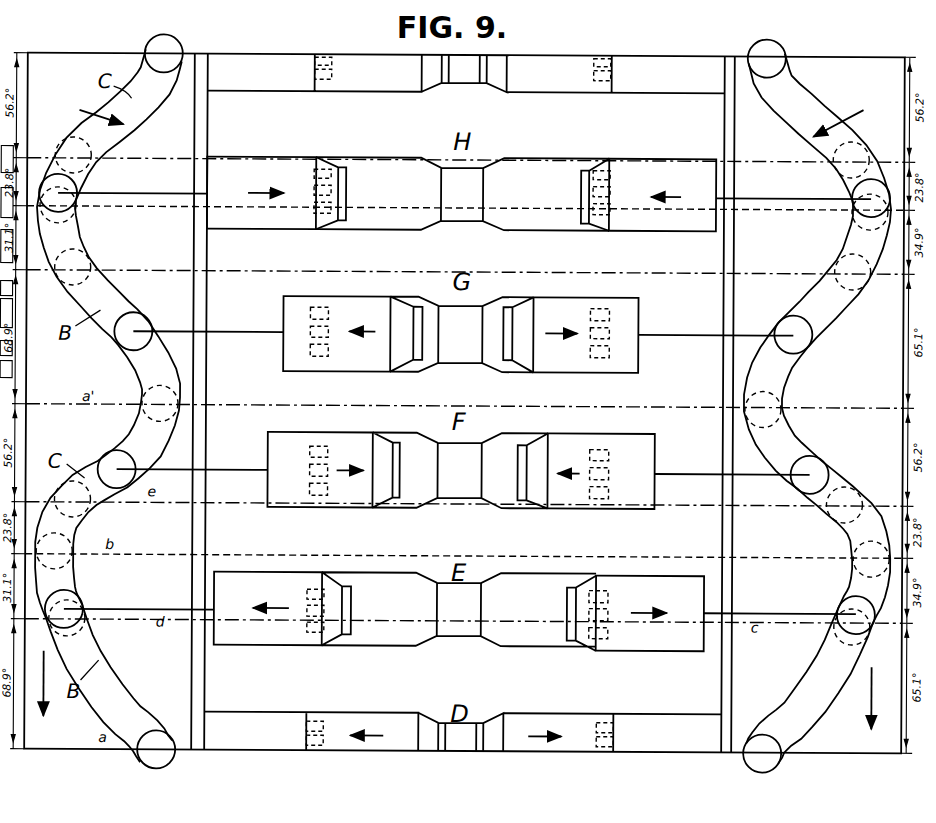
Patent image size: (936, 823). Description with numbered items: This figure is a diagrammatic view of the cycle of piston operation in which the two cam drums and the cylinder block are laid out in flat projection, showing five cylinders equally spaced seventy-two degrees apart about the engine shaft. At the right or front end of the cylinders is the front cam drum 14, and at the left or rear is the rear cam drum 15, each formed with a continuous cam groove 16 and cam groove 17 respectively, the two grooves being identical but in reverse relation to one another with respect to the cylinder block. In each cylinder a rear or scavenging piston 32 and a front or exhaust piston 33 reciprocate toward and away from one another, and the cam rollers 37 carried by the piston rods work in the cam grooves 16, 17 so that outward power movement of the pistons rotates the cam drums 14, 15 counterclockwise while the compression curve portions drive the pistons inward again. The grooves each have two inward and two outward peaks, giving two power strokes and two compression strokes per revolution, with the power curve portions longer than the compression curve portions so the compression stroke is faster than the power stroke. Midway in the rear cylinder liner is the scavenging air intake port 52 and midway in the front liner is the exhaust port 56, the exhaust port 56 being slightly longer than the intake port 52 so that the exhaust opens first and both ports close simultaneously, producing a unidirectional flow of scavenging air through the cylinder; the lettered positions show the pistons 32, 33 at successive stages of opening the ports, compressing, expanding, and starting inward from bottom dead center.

The front cam wheel or drum 14 is at (838, 82).
The rear cam wheel or drum 15 is at (80, 68).
The cam groove 16 is at (851, 111).
The cam groove 17 is at (90, 108).
The rear or scavenging piston 32 is at (267, 173).
The front or exhaust piston 33 is at (665, 173).
The cam roller 37 is at (145, 326).
The scavenging air intake port 52 is at (323, 167).
The exhaust port 56 is at (592, 170).